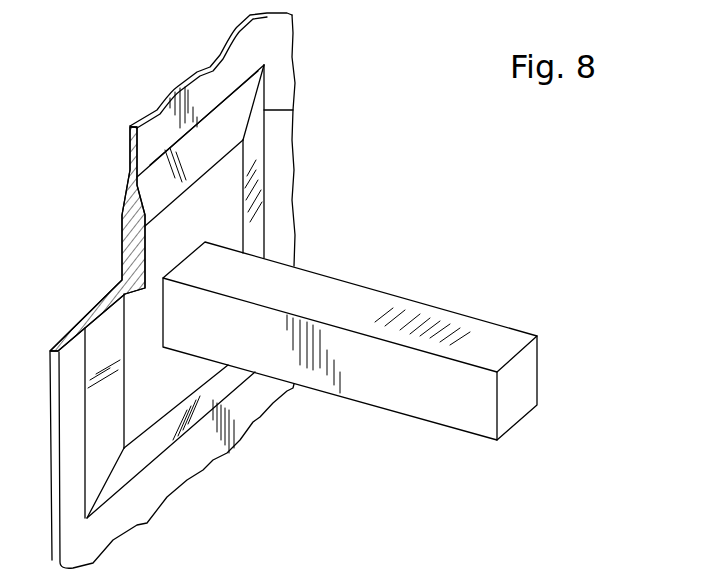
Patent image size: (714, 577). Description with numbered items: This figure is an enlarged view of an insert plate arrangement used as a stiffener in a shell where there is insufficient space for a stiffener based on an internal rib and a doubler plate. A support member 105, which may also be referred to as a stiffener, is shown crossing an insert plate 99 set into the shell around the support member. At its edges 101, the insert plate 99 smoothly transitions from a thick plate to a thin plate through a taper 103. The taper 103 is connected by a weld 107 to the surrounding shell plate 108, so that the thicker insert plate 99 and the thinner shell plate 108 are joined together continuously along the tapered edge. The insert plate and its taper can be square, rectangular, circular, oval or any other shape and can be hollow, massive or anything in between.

The insert plate 99 is at (267, 185).
The edges 101 is at (243, 225).
The taper 103 is at (255, 148).
The support member 105 is at (495, 343).
The weld 107 is at (293, 108).
The shell plate 108 is at (278, 33).